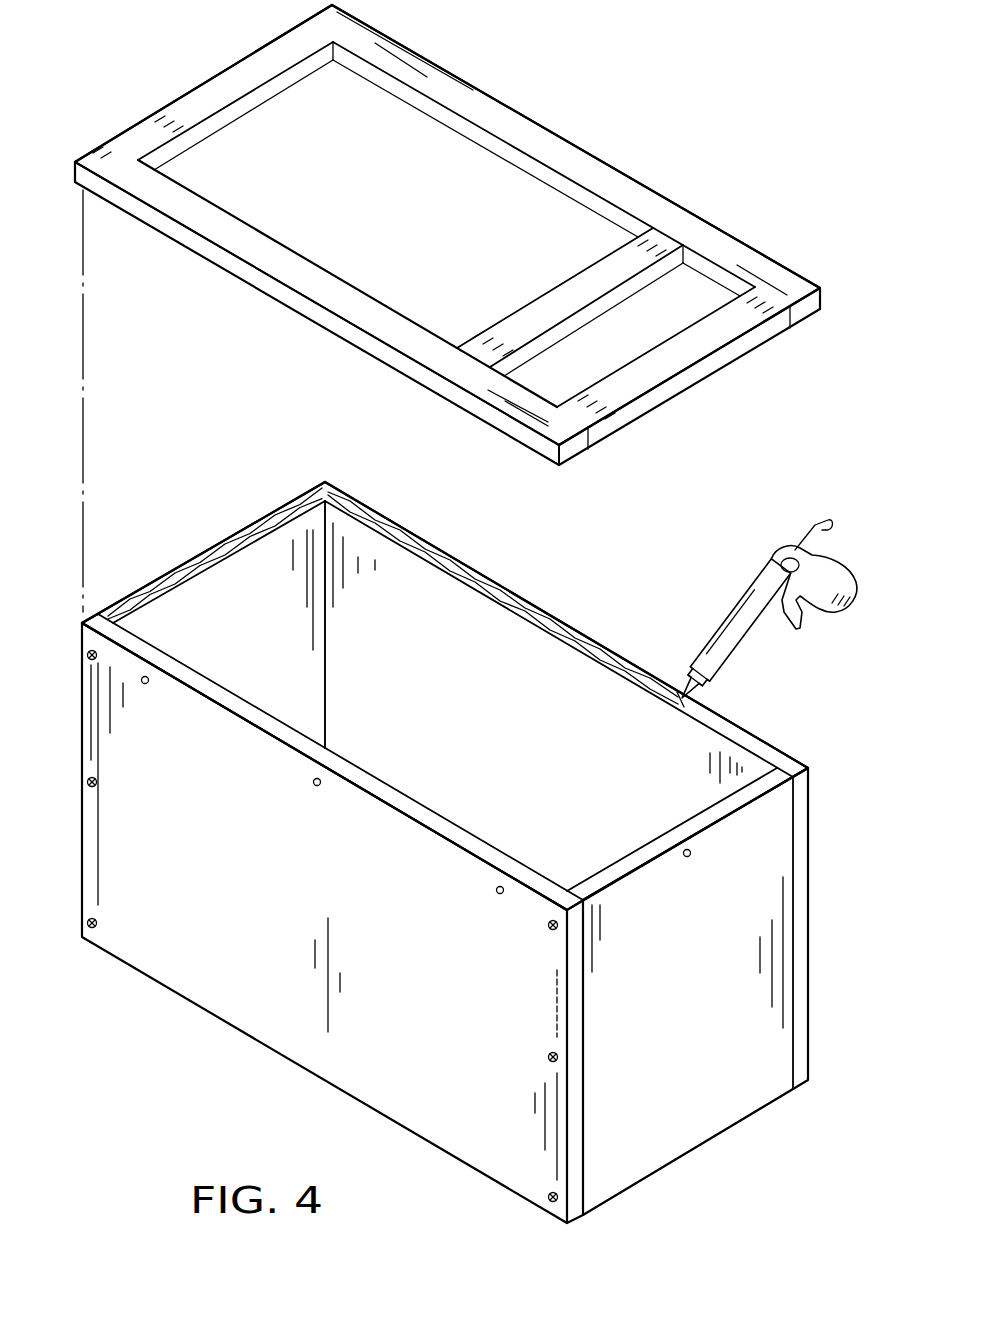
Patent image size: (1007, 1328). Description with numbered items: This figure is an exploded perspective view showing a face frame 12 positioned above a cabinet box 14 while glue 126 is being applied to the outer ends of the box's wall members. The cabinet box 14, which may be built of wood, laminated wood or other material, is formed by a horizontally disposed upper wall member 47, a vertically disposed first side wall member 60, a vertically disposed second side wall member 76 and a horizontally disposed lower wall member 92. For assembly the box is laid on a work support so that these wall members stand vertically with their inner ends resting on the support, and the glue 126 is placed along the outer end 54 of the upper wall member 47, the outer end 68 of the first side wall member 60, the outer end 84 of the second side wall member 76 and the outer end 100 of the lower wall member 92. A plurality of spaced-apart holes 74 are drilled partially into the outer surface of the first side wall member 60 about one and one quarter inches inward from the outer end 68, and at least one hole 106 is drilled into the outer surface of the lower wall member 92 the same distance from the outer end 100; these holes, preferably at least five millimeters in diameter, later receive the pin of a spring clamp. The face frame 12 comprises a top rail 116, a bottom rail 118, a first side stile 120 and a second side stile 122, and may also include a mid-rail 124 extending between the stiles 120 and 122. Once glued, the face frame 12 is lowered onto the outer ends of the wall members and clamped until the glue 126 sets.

The face frame 12 is at (447, 308).
The cabinet box 14 is at (472, 824).
The upper wall member 47 is at (270, 580).
The outer end 54 is at (203, 568).
The first side wall member 60 is at (315, 1073).
The outer end 68 is at (393, 798).
The holes 74 is at (148, 684).
The second side wall member 76 is at (678, 765).
The outer end 84 is at (700, 710).
The lower wall member 92 is at (693, 1063).
The outer end 100 is at (720, 813).
The hole 106 is at (687, 858).
The top rail 116 is at (225, 75).
The bottom rail 118 is at (693, 372).
The first side stile 120 is at (333, 323).
The second side stile 122 is at (525, 125).
The mid-rail 124 is at (567, 280).
The glue 126 is at (455, 560).